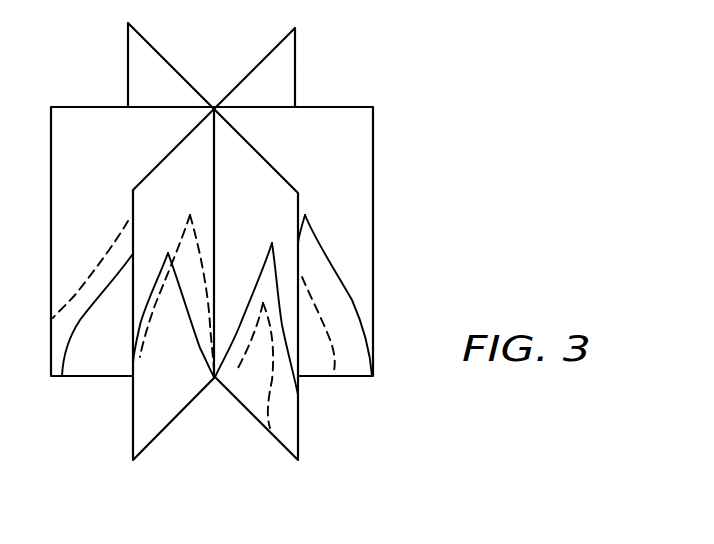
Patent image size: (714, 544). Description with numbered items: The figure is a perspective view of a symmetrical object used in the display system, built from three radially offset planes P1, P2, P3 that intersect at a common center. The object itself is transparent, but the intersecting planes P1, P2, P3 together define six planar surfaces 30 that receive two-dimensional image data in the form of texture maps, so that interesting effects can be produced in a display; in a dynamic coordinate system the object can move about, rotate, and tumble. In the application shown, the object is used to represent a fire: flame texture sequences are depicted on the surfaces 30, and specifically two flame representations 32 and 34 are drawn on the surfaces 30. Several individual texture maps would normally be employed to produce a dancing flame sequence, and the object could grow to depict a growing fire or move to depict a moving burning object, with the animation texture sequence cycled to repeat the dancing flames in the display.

The plane P1 is at (150, 43).
The plane P2 is at (297, 47).
The plane P3 is at (373, 168).
The planar surfaces 30 is at (240, 153).
The flame representation 32 is at (338, 276).
The flame representation 34 is at (158, 329).